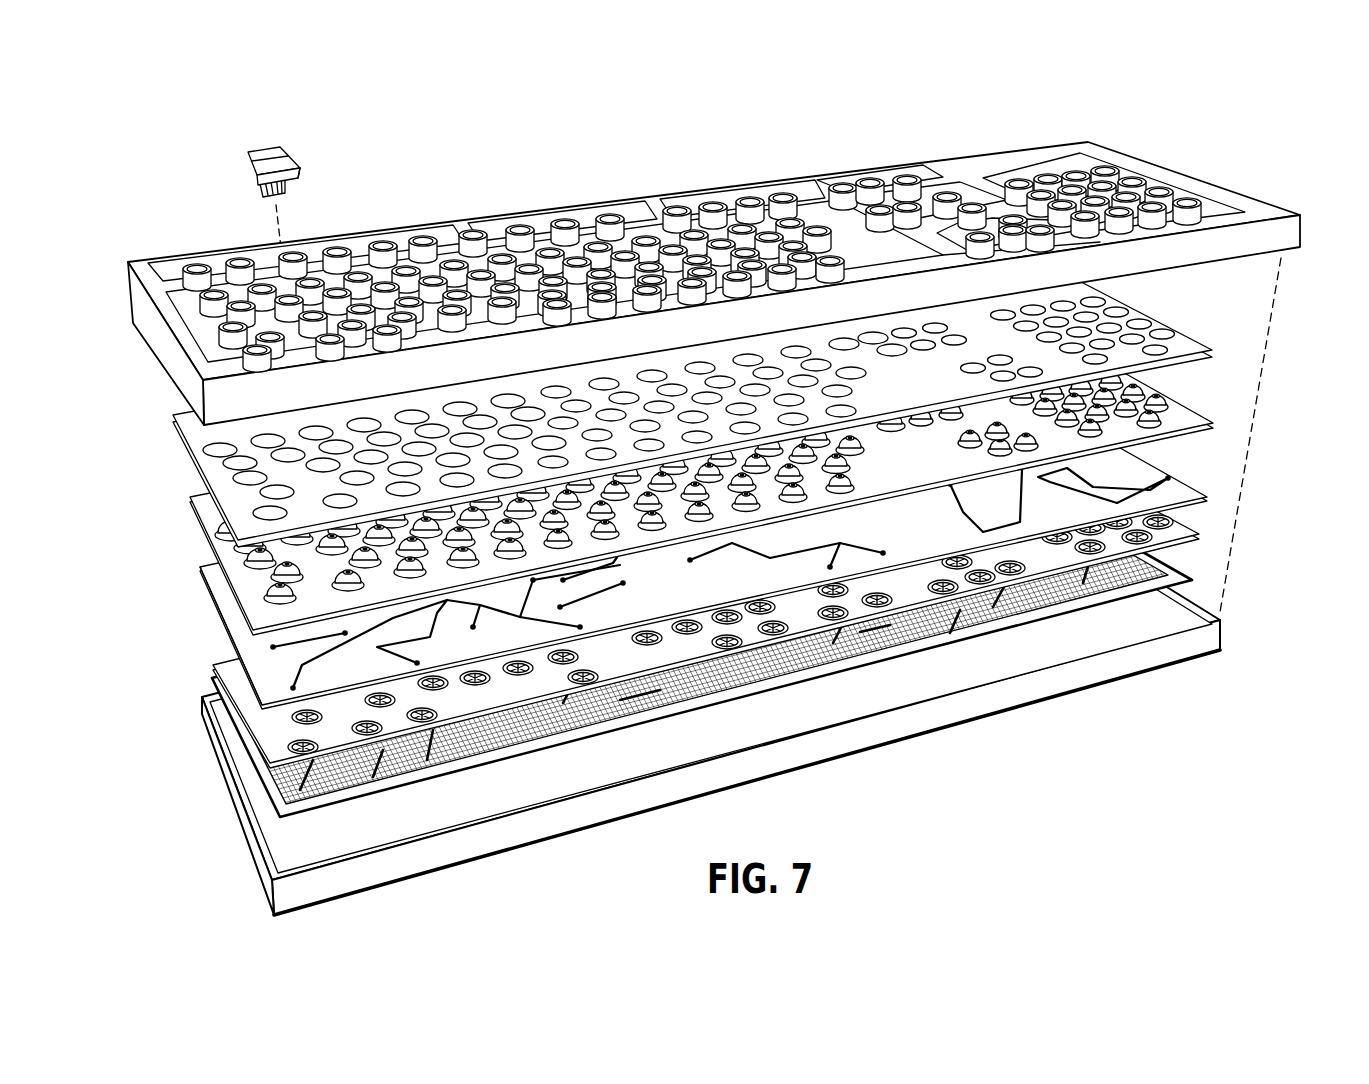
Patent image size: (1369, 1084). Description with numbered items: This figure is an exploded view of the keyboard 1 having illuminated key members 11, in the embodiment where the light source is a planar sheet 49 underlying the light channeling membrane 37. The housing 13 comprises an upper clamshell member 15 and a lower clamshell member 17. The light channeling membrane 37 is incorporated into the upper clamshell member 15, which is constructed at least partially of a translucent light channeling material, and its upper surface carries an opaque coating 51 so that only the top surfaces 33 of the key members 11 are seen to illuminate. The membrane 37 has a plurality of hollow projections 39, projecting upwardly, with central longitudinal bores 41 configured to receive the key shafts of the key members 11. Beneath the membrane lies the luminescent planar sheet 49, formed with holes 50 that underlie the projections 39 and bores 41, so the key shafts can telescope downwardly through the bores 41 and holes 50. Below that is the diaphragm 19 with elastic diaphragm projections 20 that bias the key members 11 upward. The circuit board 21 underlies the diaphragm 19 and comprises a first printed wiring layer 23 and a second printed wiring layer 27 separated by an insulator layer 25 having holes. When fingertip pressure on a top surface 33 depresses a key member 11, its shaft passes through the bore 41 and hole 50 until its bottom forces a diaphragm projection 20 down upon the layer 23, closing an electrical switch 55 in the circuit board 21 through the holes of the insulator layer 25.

The keyboard 1 is at (1283, 168).
The key member 11 is at (297, 172).
The housing 13 is at (262, 185).
The upper clamshell member 15 is at (679, 267).
The lower clamshell member 17 is at (420, 820).
The diaphragm 19 is at (200, 578).
The diaphragm projections 20 is at (257, 562).
The circuit board 21 is at (1222, 482).
The first printed wiring layer 23 is at (217, 633).
The insulator layer 25 is at (213, 677).
The second printed wiring layer 27 is at (243, 722).
The top surface of key cap 33 is at (270, 148).
The light channeling membrane 37 is at (258, 320).
The hollow projections 39 is at (483, 257).
The central longitudinal bores 41 is at (711, 227).
The planar sheet 49 is at (657, 402).
The holes 50 is at (1180, 337).
The opaque coating 51 is at (923, 223).
The electrical switches 55 is at (303, 793).